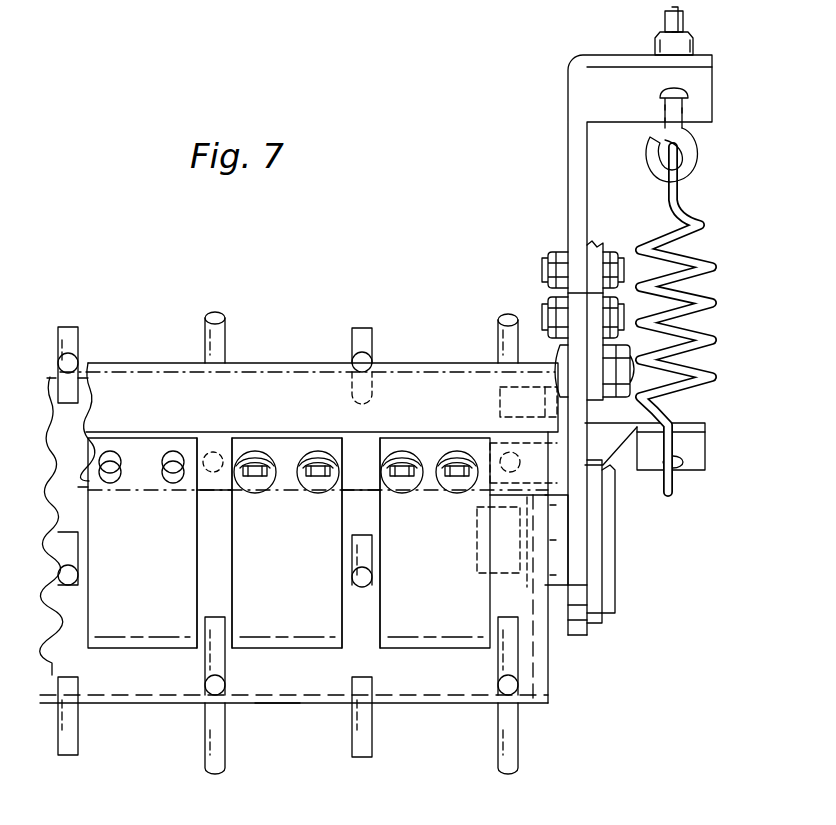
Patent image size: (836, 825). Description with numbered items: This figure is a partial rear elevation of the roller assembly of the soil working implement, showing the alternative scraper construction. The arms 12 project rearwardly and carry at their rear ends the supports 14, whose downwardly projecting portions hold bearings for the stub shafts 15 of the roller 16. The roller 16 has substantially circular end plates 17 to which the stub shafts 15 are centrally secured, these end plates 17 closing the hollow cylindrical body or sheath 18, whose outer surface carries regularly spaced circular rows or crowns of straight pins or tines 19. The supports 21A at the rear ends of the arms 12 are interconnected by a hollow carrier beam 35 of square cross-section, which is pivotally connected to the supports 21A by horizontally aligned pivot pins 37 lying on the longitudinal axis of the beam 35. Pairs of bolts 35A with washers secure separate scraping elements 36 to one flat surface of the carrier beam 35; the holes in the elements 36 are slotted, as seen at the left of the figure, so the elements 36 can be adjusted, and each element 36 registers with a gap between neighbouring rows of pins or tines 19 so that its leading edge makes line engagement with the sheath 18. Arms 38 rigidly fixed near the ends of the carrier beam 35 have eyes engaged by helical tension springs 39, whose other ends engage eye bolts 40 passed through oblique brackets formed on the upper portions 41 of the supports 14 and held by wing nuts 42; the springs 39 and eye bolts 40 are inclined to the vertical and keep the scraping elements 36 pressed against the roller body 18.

The arm 12 is at (596, 248).
The support 14 is at (585, 640).
The stub shaft 15 is at (560, 526).
The roller 16 is at (153, 716).
The end plate 17 is at (548, 678).
The body or sheath 18 is at (272, 702).
The pin or tine 19 is at (380, 347).
The support 21A is at (568, 294).
The carrier beam 35 is at (270, 360).
The bolt 35A is at (258, 490).
The scraping element 36 is at (140, 656).
The pivot pin 37 is at (487, 415).
The arm 38 is at (682, 428).
The helical tension spring 39 is at (690, 223).
The eye bolt 40 is at (665, 100).
The upper portion 41 is at (568, 147).
The wing nut 42 is at (657, 44).